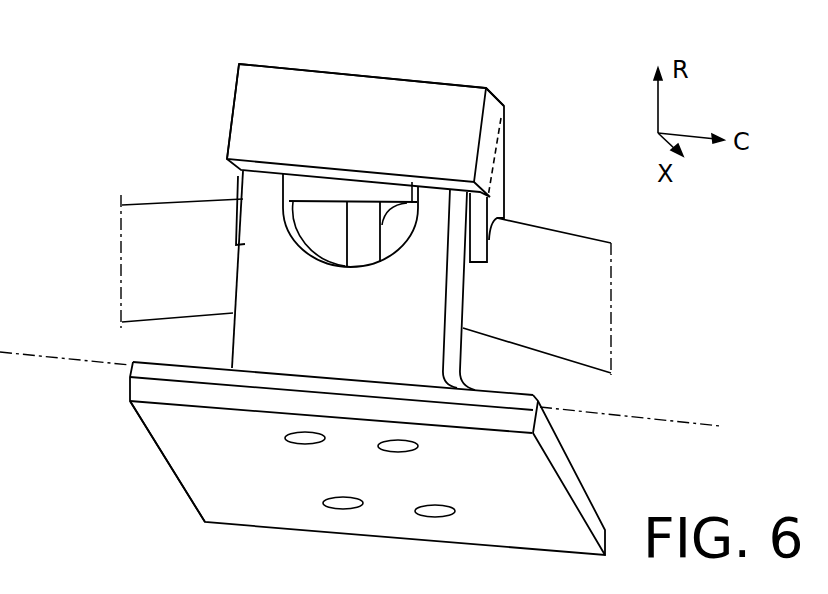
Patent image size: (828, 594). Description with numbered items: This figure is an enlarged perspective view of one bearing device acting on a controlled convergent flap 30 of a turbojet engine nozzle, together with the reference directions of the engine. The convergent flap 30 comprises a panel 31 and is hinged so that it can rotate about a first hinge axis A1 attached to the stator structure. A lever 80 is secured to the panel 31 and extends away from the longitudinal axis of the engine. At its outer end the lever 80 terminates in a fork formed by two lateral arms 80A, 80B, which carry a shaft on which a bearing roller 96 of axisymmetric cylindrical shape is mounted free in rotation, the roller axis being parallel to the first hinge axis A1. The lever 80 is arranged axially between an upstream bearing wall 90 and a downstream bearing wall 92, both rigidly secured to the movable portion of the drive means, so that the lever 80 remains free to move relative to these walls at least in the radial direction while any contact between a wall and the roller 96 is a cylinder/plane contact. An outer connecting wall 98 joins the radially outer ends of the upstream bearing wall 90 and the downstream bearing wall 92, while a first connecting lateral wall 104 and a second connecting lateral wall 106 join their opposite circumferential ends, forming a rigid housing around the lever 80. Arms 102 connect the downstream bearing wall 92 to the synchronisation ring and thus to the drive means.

The convergent flap 30 is at (576, 477).
The panel 31 is at (202, 458).
The lever 80 is at (270, 279).
The lateral arm 80A is at (440, 220).
The lateral arm 80B is at (263, 203).
The upstream bearing wall 90 is at (270, 88).
The downstream bearing wall 92 is at (498, 147).
The bearing roller 96 is at (331, 188).
The outer connecting wall 98 is at (430, 82).
The arm 102 is at (498, 203).
The first connecting lateral wall 104 is at (497, 115).
The second connecting lateral wall 106 is at (230, 123).
The first hinge axis A1 is at (673, 420).